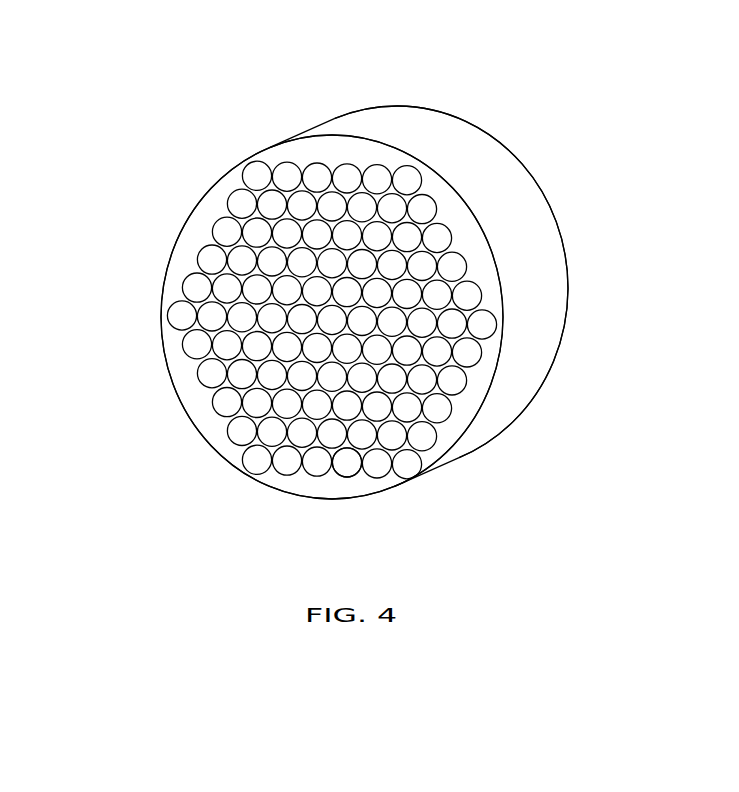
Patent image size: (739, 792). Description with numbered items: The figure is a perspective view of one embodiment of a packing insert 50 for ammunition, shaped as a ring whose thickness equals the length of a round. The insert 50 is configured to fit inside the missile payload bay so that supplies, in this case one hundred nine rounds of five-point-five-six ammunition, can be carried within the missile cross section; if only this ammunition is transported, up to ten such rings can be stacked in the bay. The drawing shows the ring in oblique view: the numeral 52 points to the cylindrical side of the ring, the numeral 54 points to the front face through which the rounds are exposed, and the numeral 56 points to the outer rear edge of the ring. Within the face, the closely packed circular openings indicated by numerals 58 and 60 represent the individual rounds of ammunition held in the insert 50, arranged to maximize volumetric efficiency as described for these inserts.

The packing insert 50 is at (413, 95).
The bundle side wall 52 is at (490, 192).
The front face / jacket 54 is at (197, 229).
The outer edge 56 is at (565, 247).
The optical fibers 58 is at (292, 462).
The optical fiber 60 is at (347, 472).